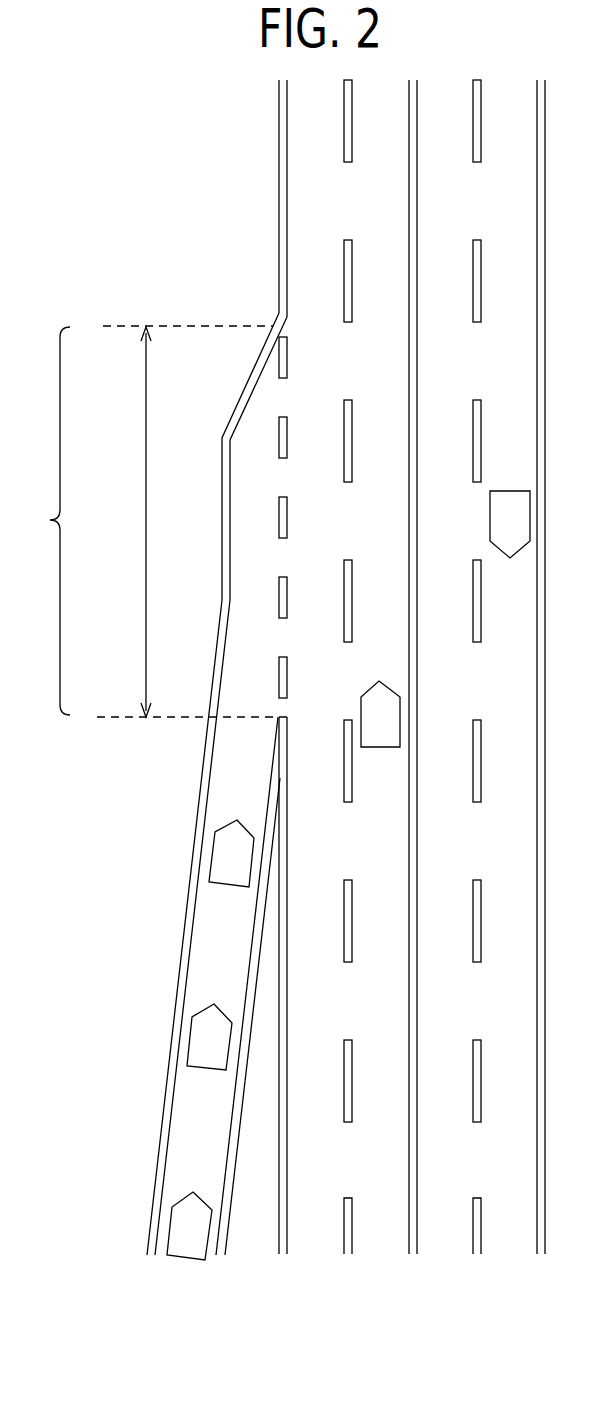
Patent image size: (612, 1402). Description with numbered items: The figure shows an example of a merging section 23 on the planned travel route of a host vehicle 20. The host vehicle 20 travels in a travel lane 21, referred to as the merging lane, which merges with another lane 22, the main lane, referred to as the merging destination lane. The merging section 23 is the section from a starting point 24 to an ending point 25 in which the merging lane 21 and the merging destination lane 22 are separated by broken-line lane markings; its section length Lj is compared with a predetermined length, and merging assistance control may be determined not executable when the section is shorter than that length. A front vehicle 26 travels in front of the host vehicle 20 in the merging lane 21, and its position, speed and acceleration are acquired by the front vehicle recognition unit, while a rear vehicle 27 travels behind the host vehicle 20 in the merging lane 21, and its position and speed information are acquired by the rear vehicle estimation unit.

The host vehicle 20 is at (192, 1040).
The travel lane 21 is at (197, 1133).
The other lane 22 is at (315, 1210).
The merging section 23 is at (84, 522).
The starting point 24 is at (128, 718).
The ending point 25 is at (133, 326).
The front vehicle 26 is at (213, 855).
The rear vehicle 27 is at (170, 1228).